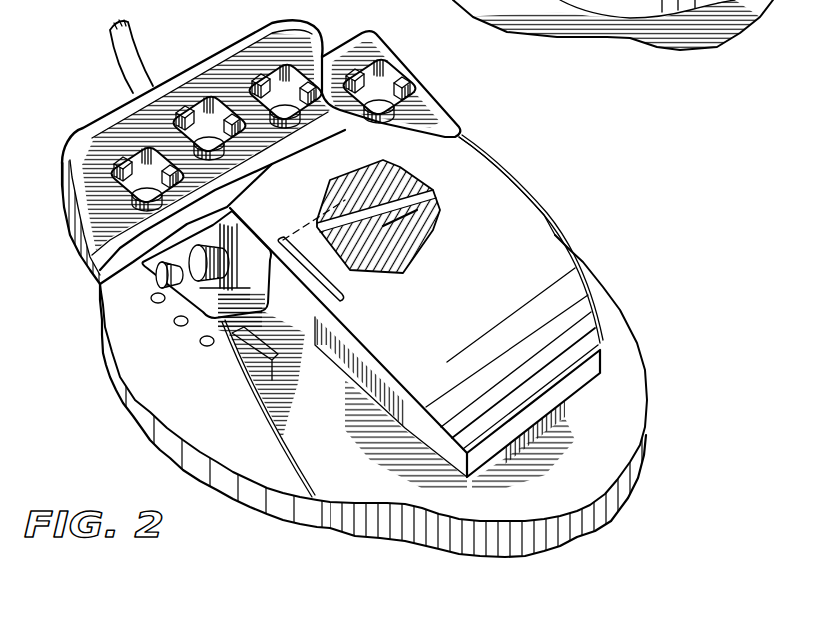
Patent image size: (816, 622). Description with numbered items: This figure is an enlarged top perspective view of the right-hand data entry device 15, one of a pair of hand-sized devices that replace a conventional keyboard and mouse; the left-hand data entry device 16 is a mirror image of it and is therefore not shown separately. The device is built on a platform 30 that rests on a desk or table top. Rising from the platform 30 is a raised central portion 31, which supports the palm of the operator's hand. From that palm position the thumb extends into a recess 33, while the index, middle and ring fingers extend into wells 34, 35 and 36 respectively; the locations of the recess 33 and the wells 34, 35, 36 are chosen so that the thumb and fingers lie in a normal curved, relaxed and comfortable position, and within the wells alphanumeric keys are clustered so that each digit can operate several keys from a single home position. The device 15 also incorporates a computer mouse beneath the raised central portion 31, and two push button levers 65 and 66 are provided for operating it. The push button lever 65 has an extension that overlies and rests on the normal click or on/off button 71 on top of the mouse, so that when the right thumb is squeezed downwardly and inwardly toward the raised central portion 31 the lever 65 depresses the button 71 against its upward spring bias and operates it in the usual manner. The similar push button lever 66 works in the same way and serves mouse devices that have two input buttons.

The right data entry device 15 is at (552, 185).
The left data entry device 16 is at (657, 0).
The platform 30 is at (640, 365).
The raised central portion 31 is at (489, 183).
The recess 33 is at (308, 420).
The well 34 is at (143, 150).
The well 35 is at (206, 97).
The well 36 is at (292, 63).
The push button lever 65 is at (270, 307).
The push button lever 66 is at (336, 315).
The click button 71 is at (410, 217).